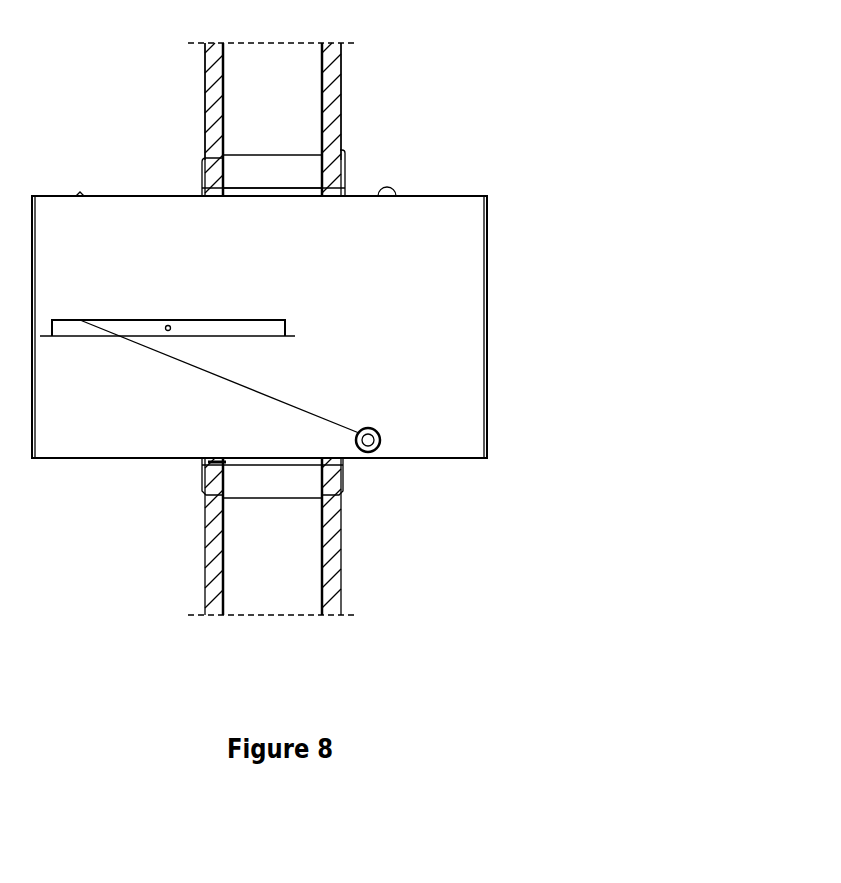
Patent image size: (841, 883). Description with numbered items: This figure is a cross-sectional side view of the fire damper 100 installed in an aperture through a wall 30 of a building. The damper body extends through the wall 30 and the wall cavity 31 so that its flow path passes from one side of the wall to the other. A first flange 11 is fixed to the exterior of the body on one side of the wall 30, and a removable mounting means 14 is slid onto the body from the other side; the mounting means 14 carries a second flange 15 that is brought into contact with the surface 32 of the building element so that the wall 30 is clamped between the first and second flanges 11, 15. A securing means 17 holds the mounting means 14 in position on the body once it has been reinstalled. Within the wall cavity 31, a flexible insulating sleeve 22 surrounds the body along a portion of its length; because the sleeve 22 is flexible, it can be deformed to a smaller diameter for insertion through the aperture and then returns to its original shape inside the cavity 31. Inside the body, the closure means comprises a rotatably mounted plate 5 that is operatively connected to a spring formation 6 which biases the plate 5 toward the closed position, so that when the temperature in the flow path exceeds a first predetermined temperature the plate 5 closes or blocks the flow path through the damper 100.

The fire damper 100 is at (560, 282).
The mounting means 14 is at (424, 187).
The wall 30 is at (270, 125).
The wall cavity 31 is at (204, 50).
The surface 32 is at (342, 64).
The first flange 11 is at (200, 162).
The second flange 15 is at (345, 162).
The flexible insulating sleeve 22 is at (287, 176).
The plate 5 is at (84, 337).
The spring formation 6 is at (300, 408).
The securing means 17 is at (383, 458).